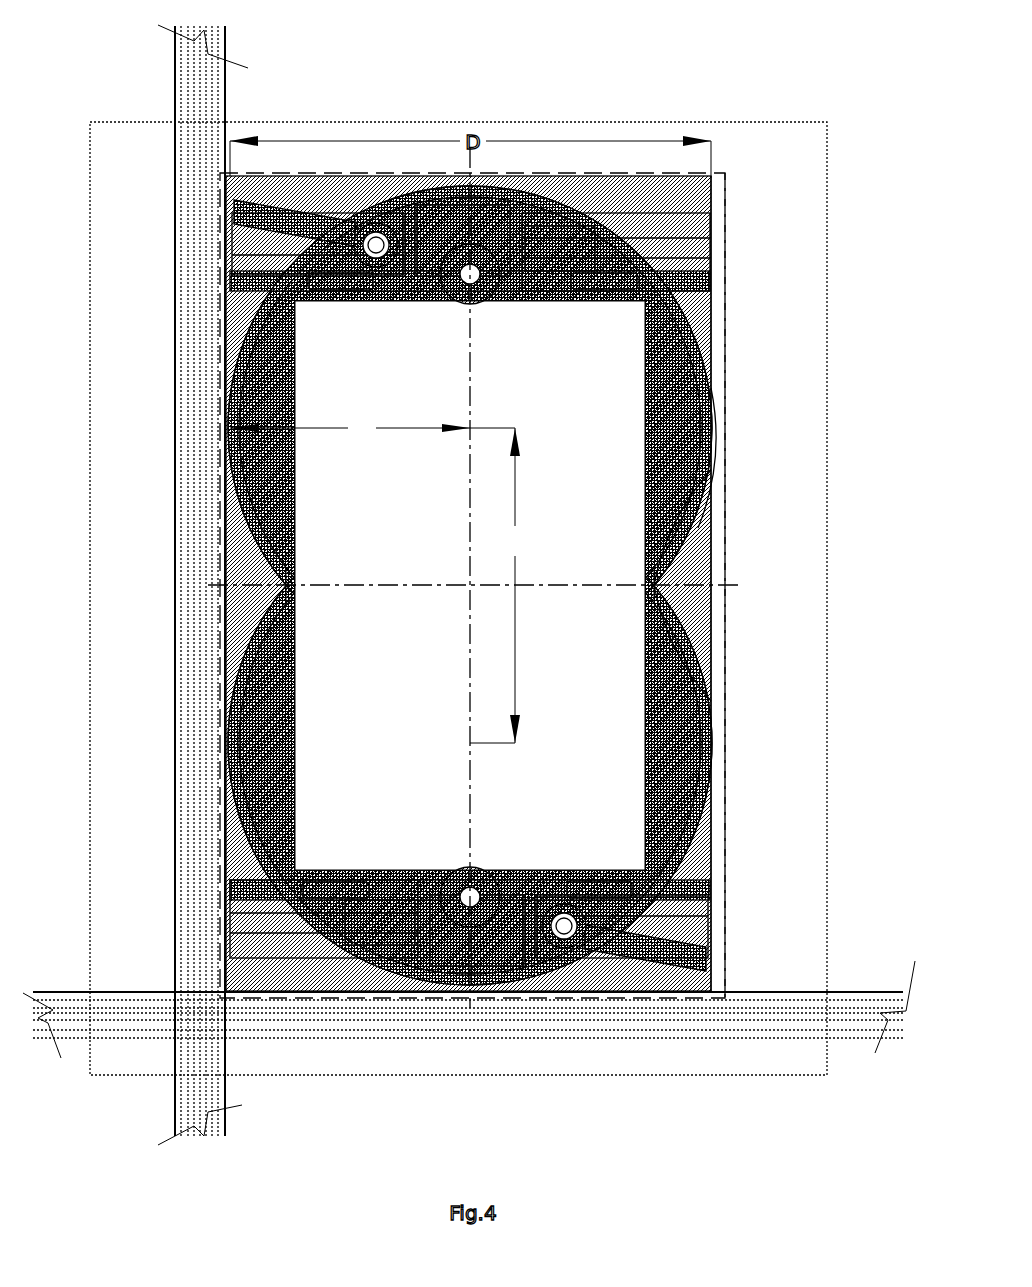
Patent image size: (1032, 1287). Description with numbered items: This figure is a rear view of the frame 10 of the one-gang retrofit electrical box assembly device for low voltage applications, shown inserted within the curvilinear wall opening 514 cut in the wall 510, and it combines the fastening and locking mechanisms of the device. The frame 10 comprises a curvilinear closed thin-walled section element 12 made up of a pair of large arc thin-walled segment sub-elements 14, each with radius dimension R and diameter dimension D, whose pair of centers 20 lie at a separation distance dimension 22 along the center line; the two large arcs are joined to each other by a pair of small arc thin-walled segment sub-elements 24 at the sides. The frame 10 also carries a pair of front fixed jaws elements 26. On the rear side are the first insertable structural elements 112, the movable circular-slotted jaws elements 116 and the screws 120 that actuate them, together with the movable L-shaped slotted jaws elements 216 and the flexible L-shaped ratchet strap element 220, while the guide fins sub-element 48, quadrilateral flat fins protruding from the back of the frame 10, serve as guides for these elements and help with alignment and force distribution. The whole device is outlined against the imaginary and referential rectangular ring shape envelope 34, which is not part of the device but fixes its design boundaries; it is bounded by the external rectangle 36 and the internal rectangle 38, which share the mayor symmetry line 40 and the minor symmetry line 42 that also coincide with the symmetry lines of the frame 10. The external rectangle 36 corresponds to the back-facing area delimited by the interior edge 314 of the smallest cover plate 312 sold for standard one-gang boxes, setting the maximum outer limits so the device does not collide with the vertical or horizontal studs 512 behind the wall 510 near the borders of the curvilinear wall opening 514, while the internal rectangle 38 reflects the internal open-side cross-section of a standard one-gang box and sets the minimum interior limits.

The frame 10 is at (743, 686).
The curvilinear closed thin-walled section element 12 is at (714, 524).
The large arc thin-walled segment sub-elements 14 is at (697, 545).
The centers 20 is at (436, 431).
The separation distance dimension 22 is at (499, 585).
The small arc thin-walled segment sub-elements 24 is at (307, 556).
The front fixed jaws elements 26 is at (665, 330).
The imaginary and referential rectangular ring shape envelope 34 is at (632, 770).
The external rectangle 36 is at (733, 627).
The internal rectangle 38 is at (603, 494).
The mayor symmetry line 40 is at (424, 651).
The minor symmetry line 42 is at (555, 618).
The guide fins sub-element 48 is at (326, 304).
The first insertable structural elements 112 is at (407, 293).
The movable circular-slotted jaws elements 116 is at (273, 260).
The screws 120 is at (372, 273).
The movable L-shaped slotted jaws elements 216 is at (657, 238).
The flexible L-shaped ratchet strap element 220 is at (533, 287).
The smallest cover plate 312 is at (747, 429).
The interior edge 314 is at (733, 470).
The wall 510 is at (838, 458).
The studs 512 is at (884, 959).
The curvilinear wall opening 514 is at (727, 495).